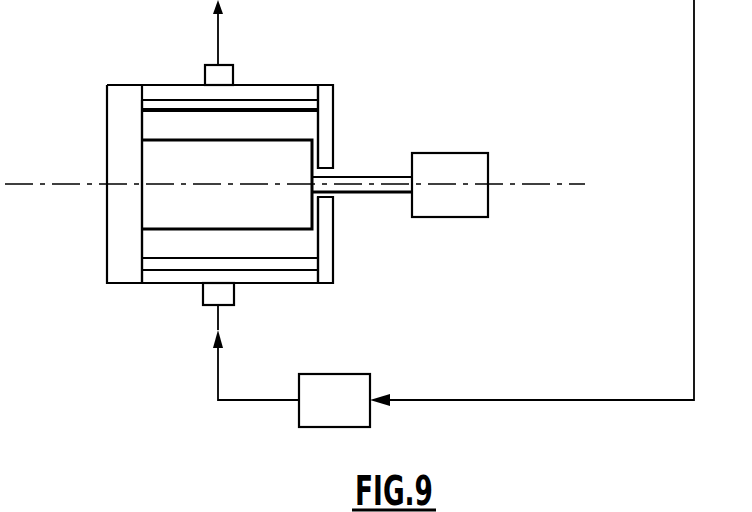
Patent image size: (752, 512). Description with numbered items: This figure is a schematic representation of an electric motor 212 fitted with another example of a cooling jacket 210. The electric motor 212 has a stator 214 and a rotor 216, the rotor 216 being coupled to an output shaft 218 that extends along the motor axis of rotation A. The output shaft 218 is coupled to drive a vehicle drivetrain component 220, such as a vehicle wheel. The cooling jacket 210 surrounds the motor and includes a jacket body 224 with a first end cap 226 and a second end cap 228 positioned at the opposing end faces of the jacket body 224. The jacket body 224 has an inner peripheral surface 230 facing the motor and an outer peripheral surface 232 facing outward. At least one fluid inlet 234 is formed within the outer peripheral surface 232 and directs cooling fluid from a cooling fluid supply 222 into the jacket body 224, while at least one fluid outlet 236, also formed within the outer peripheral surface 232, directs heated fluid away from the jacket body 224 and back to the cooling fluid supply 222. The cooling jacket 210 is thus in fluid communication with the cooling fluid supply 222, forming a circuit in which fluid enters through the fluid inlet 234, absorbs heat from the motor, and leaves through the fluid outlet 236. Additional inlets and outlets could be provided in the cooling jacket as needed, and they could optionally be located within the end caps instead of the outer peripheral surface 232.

The cooling jacket 210 is at (183, 285).
The electric motor 212 is at (336, 230).
The stator 214 is at (289, 105).
The rotor 216 is at (165, 163).
The output shaft 218 is at (350, 177).
The vehicle drivetrain component 220 is at (462, 165).
The cooling fluid supply 222 is at (357, 412).
The jacket body 224 is at (158, 278).
The first end cap 226 is at (118, 208).
The second end cap 228 is at (326, 101).
The inner peripheral surface 230 is at (166, 100).
The outer peripheral surface 232 is at (181, 85).
The fluid inlet 234 is at (235, 290).
The fluid outlet 236 is at (228, 73).
The motor axis of rotation A is at (546, 183).